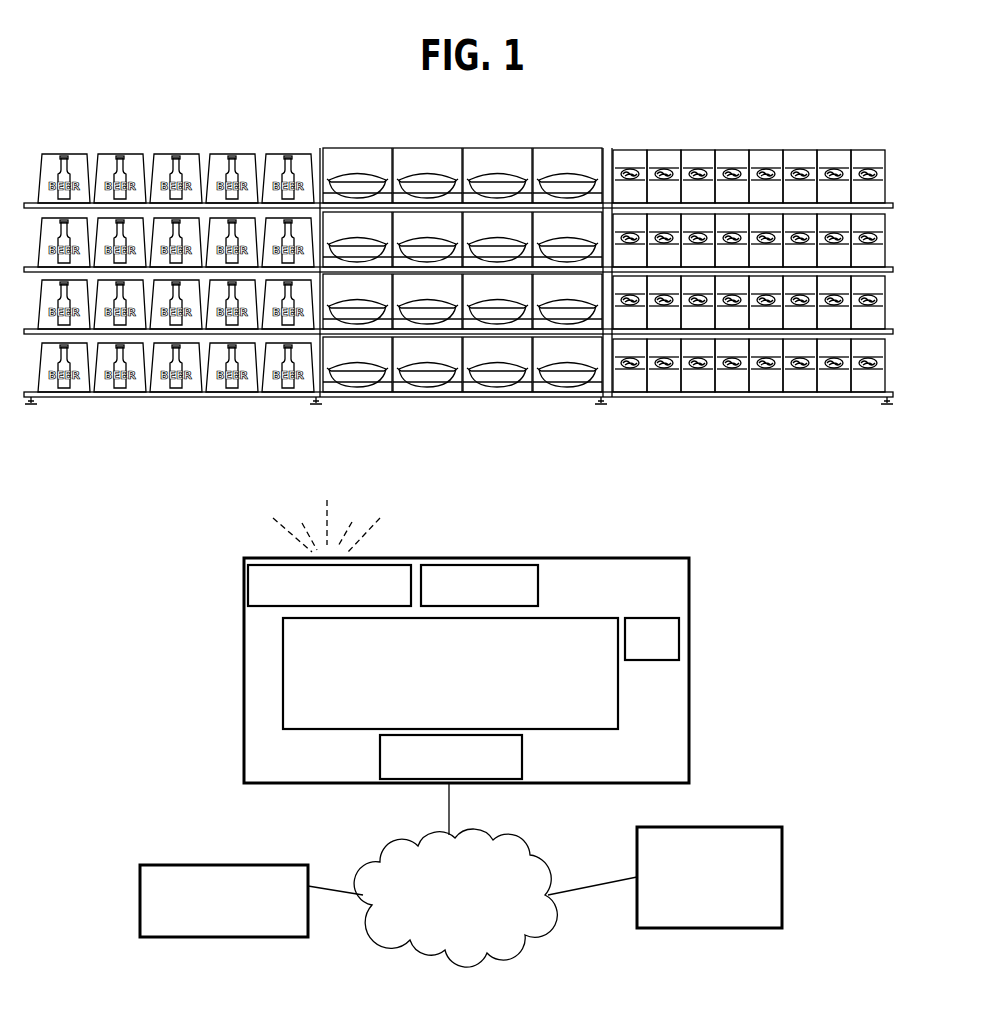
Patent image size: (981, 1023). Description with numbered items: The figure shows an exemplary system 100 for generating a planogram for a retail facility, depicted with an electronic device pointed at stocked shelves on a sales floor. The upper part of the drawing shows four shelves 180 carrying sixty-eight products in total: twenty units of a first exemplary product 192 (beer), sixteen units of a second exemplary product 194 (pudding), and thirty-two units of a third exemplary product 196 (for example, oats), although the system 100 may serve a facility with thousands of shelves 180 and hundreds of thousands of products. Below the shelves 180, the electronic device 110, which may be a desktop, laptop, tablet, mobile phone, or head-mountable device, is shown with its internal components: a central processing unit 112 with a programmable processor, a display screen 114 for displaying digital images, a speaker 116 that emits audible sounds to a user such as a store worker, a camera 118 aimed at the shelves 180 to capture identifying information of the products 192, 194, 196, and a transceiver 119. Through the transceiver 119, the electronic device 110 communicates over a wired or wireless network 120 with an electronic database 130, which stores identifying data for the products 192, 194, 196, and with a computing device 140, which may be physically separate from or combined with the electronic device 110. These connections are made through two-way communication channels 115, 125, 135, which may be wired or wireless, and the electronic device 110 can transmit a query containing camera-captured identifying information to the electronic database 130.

The system 100 is at (160, 518).
The electronic device 110 is at (690, 652).
The central processing unit 112 is at (682, 625).
The display screen 114 is at (618, 712).
The two-way communication channel 115 is at (449, 802).
The speaker 116 is at (540, 577).
The camera 118 is at (388, 572).
The transceiver 119 is at (522, 755).
The network 120 is at (517, 940).
The two-way communication channel 125 is at (340, 888).
The electronic database 130 is at (170, 863).
The two-way communication channel 135 is at (593, 887).
The computing device 140 is at (722, 826).
The shelves 180 is at (893, 205).
The first exemplary product 192 is at (75, 162).
The second exemplary product 194 is at (353, 162).
The third exemplary product 196 is at (633, 162).